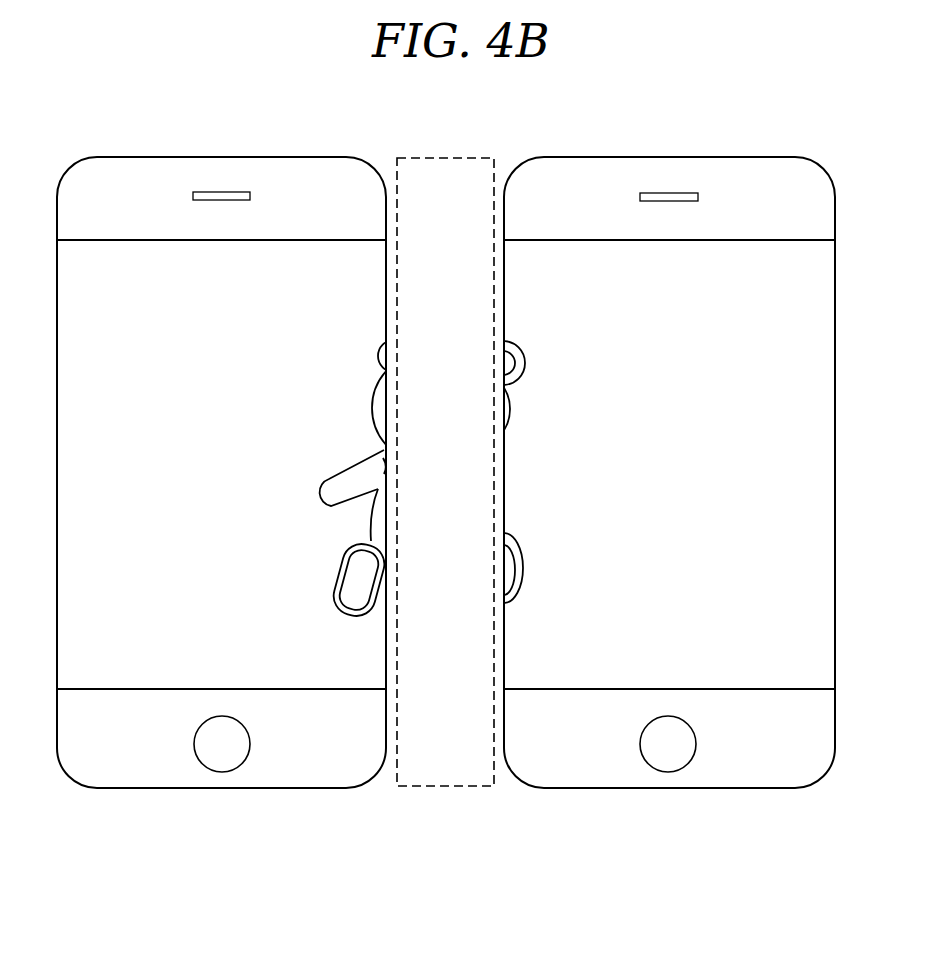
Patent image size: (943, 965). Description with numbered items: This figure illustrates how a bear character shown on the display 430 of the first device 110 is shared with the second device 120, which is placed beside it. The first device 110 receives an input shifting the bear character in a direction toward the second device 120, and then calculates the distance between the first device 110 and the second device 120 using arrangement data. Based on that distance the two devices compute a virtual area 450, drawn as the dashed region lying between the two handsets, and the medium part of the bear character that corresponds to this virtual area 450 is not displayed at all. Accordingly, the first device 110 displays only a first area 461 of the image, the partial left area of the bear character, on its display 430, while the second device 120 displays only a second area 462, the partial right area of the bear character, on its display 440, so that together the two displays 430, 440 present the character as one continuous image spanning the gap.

The first device 110 is at (291, 157).
The second device 120 is at (737, 157).
The display of the first device 430 is at (296, 240).
The display of the second device 440 is at (745, 240).
The virtual area 450 is at (448, 157).
The first area 461 is at (377, 400).
The second area 462 is at (521, 357).